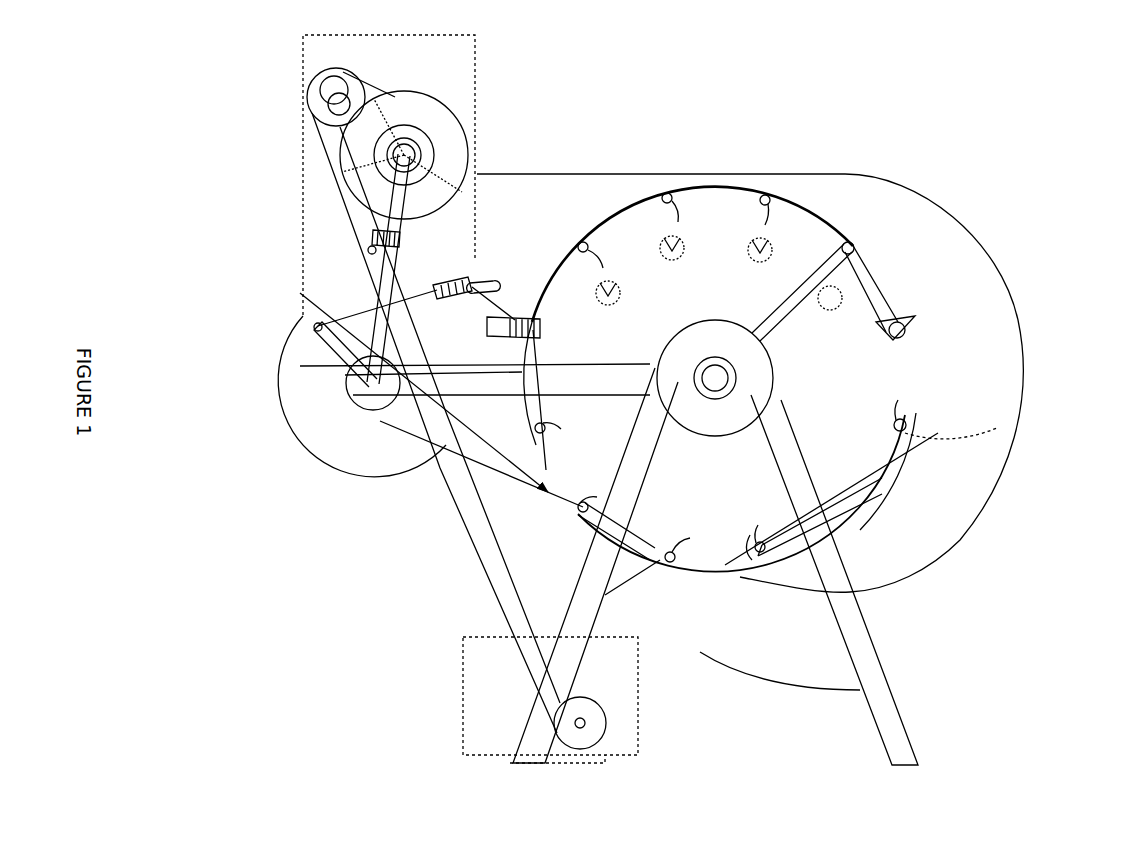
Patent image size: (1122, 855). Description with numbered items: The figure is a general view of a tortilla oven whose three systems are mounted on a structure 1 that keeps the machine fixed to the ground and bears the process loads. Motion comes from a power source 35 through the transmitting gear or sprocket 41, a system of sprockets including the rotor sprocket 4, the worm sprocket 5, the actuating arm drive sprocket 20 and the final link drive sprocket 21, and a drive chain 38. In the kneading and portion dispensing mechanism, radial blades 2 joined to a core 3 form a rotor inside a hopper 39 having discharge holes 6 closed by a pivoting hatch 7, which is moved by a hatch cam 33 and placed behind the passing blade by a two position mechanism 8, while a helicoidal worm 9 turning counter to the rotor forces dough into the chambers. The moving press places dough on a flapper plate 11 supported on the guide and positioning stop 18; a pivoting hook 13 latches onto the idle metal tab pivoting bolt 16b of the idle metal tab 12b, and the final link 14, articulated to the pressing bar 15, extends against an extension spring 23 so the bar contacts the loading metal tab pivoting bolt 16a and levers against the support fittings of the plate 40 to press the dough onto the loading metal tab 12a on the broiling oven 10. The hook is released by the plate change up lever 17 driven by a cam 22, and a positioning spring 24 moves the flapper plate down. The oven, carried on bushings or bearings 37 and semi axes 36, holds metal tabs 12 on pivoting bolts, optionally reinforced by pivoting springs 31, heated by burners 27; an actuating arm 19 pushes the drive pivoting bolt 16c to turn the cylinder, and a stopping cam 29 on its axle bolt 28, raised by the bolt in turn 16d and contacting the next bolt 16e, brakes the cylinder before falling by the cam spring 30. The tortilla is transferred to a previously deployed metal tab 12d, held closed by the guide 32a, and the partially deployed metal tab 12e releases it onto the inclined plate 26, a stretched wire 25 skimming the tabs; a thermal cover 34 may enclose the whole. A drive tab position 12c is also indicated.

The structure 1 is at (580, 607).
The blades 2 is at (393, 108).
The core 3 is at (447, 150).
The rotor gear or chain sprocket 4 is at (420, 140).
The worm gear or chain sprocket 5 is at (325, 85).
The discharge holes 6 is at (477, 242).
The pivoting hatch 7 is at (470, 185).
The two position mechanism 8 is at (395, 243).
The worm 9 is at (313, 115).
The broiling oven 10 is at (768, 287).
The flapper plate 11 is at (407, 218).
The metal tab 12 is at (637, 200).
The loading metal tab 12a is at (562, 260).
The idle metal tab 12b is at (405, 432).
The drum section 12c is at (933, 283).
The previously deployed metal tab 12d is at (940, 430).
The partially deployed metal tab 12e is at (522, 496).
The pivoting hook 13 is at (510, 322).
The final link 14 is at (323, 343).
The pressing bar 15 is at (513, 350).
The loading metal tab pivoting bolt 16a is at (587, 238).
The idle metal tab pivoting bolt 16b is at (390, 306).
The drive pivoting bolt 16c is at (580, 573).
The pivoting bolt of the metal tab in turn 16d is at (770, 556).
The next bolt in turn 16e is at (792, 532).
The plate change up lever 17 is at (423, 392).
The guide and positioning stop 18 is at (497, 337).
The actuating arm 19 is at (635, 558).
The actuating arm drive sprocket 20 is at (582, 553).
The final link drive sprocket 21 is at (338, 376).
The cam 22 is at (395, 392).
The extension spring 23 is at (433, 288).
The positioning spring 24 is at (465, 382).
The stretched tight wire 25 is at (853, 232).
The inclined plate 26 is at (702, 648).
The burners or heating source 27 is at (687, 240).
The axle bolt of the cam 28 is at (895, 426).
The stopping cam 29 is at (813, 505).
The cam spring 30 is at (805, 553).
The pivoting spring 31 is at (898, 310).
The guide 32a is at (722, 572).
The hatch cam 33 is at (383, 208).
The thermal cover 34 is at (943, 203).
The power source 35 is at (498, 700).
The semi axes 36 is at (731, 357).
The bushings or bearings 37 is at (697, 353).
The drive chain 38 is at (433, 483).
The hopper 39 is at (383, 57).
The support fittings of the plate 40 is at (393, 243).
The transmitting gear or sprocket 41 is at (567, 735).